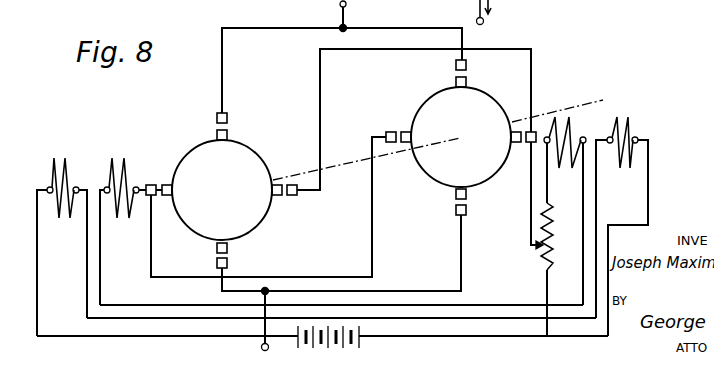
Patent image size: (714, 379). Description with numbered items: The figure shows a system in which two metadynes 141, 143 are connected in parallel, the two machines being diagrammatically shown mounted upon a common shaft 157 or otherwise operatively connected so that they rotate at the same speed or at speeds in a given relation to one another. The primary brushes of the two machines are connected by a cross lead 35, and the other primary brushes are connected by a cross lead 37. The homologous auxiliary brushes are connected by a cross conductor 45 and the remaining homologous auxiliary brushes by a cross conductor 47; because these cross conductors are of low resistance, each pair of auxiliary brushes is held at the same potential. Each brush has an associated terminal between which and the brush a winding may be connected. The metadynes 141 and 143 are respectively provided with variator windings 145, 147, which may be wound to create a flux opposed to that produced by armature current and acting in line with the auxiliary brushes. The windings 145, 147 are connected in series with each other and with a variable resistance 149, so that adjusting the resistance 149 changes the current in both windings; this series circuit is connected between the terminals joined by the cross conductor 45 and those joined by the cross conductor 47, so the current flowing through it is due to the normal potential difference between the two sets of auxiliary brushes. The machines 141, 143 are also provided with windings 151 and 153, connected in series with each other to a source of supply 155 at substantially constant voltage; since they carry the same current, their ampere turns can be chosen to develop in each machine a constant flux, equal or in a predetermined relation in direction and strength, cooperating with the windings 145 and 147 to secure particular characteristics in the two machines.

The cross lead 35 is at (278, 15).
The cross lead 37 is at (425, 273).
The cross conductor 45 is at (335, 50).
The cross conductor 47 is at (333, 258).
The metadyne 141 is at (250, 146).
The metadyne 143 is at (427, 101).
The variator winding 145 is at (120, 157).
The variator winding 147 is at (566, 117).
The variable resistance 149 is at (560, 262).
The winding 151 is at (58, 157).
The winding 153 is at (623, 110).
The source of supply 155 is at (360, 345).
The common shaft 157 is at (342, 167).